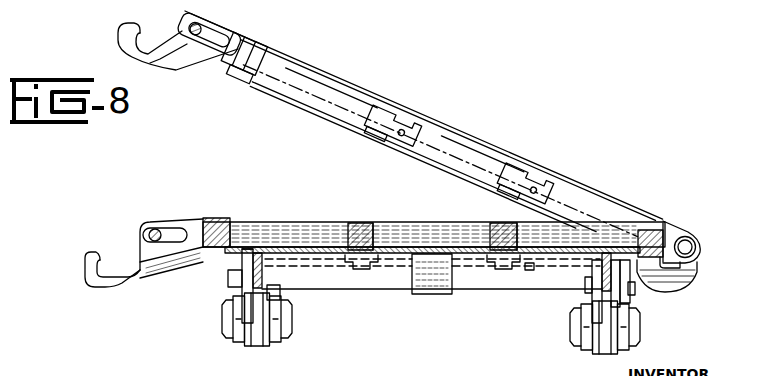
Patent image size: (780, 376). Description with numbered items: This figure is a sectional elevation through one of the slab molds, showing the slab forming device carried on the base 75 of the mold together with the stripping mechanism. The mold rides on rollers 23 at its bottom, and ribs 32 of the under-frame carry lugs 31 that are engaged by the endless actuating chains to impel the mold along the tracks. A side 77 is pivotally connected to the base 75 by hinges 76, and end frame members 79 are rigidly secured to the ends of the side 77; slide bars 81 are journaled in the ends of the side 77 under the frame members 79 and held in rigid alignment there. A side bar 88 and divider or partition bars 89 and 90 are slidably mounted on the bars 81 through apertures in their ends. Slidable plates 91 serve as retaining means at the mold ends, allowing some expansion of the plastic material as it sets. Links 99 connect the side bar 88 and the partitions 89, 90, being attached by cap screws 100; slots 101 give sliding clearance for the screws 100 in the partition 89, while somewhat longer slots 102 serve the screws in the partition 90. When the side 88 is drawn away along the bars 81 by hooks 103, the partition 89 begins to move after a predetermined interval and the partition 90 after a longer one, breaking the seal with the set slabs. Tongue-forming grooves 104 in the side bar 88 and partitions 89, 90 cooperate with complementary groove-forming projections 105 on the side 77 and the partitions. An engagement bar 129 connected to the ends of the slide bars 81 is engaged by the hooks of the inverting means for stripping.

The rollers 23 is at (256, 343).
The lugs 31 is at (428, 294).
The ribs 32 is at (327, 285).
The base 75 is at (558, 262).
The hinges 76 is at (677, 290).
The side 77 is at (655, 233).
The end frame members 79 is at (497, 140).
The slide bars 81 is at (343, 87).
The side bar 88 is at (218, 222).
The partition bar 89 is at (356, 223).
The partition bar 90 is at (513, 223).
The slidable plates 91 is at (275, 223).
The links 99 is at (312, 108).
The cap screws 100 is at (218, 270).
The slots 101 is at (375, 270).
The slots 102 is at (518, 272).
The hooks 103 is at (105, 287).
The tongue-forming grooves 104 is at (228, 228).
The groove-forming projections 105 is at (346, 223).
The engagement bar 129 is at (163, 229).